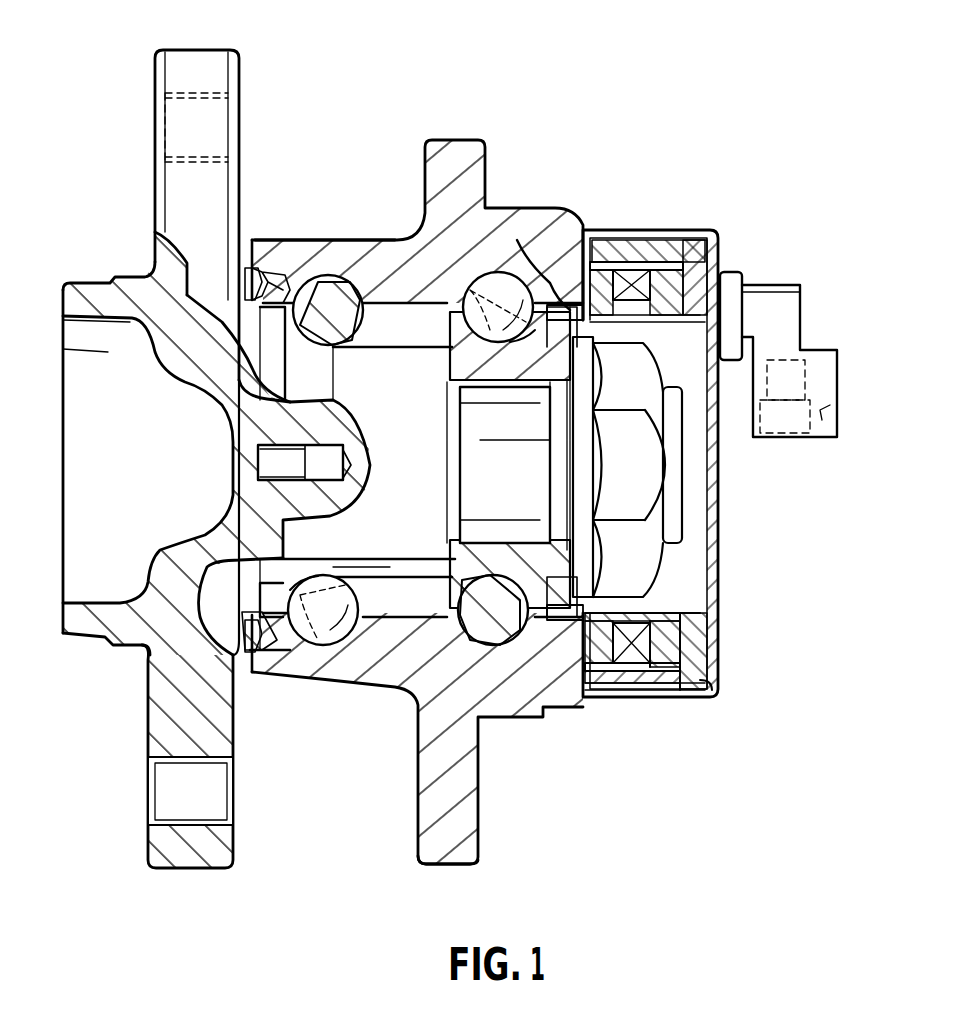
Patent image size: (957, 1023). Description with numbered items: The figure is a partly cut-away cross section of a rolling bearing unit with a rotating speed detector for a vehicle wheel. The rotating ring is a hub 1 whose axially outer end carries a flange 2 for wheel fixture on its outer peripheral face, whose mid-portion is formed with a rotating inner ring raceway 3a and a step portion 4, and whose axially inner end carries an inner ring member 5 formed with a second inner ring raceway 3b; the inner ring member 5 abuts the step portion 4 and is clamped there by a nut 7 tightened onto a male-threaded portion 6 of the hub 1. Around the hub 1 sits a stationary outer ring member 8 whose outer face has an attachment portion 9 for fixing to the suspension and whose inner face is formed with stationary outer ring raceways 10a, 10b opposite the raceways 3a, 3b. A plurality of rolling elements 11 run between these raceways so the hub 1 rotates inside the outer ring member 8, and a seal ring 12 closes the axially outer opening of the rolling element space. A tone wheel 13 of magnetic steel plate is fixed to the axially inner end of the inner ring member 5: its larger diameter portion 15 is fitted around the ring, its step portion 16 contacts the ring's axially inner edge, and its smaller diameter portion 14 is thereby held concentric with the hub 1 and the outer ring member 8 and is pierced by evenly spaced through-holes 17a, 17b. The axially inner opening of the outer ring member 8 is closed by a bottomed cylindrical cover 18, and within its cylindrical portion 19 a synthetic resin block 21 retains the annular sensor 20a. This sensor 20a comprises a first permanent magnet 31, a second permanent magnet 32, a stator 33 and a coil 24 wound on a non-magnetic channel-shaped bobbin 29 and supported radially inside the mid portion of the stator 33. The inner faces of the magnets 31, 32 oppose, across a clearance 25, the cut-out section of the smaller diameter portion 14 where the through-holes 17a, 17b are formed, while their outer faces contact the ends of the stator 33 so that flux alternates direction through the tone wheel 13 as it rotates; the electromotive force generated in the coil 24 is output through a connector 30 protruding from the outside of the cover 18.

The hub 1 is at (418, 664).
The flange 2 is at (172, 195).
The inner ring raceway 3a is at (317, 620).
The inner ring raceway 3b is at (513, 277).
The step portion 4 is at (447, 353).
The inner ring member 5 is at (543, 267).
The male-threaded portion 6 is at (533, 482).
The nut 7 is at (648, 443).
The outer ring member 8 is at (360, 247).
The attachment portion 9 is at (467, 847).
The outer ring raceway 10a is at (335, 290).
The outer ring raceway 10b is at (493, 645).
The rolling elements 11 is at (350, 280).
The seal ring 12 is at (243, 263).
The tone wheel 13 is at (720, 277).
The smaller diameter portion 14 is at (657, 663).
The larger diameter portion 15 is at (553, 683).
The step portion 16 is at (610, 607).
The through-hole 17a is at (628, 258).
The through-hole 17b is at (720, 287).
The cover 18 is at (703, 702).
The cylindrical portion 19 is at (703, 680).
The sensor 20a is at (660, 245).
The synthetic resin block 21 is at (703, 650).
The coil 24 is at (630, 670).
The clearance 25 is at (670, 647).
The bobbin 29 is at (675, 280).
The connector 30 is at (790, 325).
The first permanent magnet 31 is at (603, 230).
The second permanent magnet 32 is at (683, 647).
The stator 33 is at (690, 700).